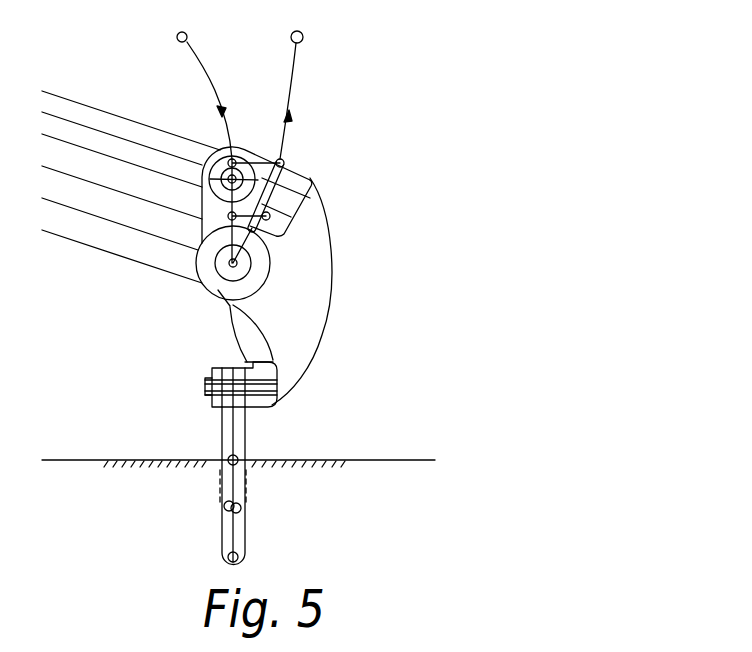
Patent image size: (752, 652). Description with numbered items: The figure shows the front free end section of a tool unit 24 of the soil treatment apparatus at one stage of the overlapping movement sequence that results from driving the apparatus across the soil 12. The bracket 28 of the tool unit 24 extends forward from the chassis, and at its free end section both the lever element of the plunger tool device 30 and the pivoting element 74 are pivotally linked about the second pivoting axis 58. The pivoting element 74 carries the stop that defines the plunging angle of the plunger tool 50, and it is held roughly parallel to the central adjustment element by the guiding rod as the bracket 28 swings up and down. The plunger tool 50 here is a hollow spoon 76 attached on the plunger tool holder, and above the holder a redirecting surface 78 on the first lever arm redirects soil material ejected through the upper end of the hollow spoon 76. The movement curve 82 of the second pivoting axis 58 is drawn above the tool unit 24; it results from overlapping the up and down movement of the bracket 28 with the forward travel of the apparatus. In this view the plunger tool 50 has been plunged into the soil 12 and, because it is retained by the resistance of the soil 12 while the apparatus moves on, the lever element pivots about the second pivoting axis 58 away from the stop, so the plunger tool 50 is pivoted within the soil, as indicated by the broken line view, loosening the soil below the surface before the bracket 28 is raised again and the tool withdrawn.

The soil 12 is at (392, 453).
The tool unit 24 is at (388, 172).
The bracket 28 is at (130, 248).
The plunger tool device 30 is at (332, 307).
The plunger tool 50 is at (310, 518).
The second pivoting axis 58 is at (232, 263).
The pivoting element 74 is at (207, 197).
The hollow spoon 76 is at (247, 532).
The redirecting surface 78 is at (240, 332).
The movement curve 82 is at (213, 90).